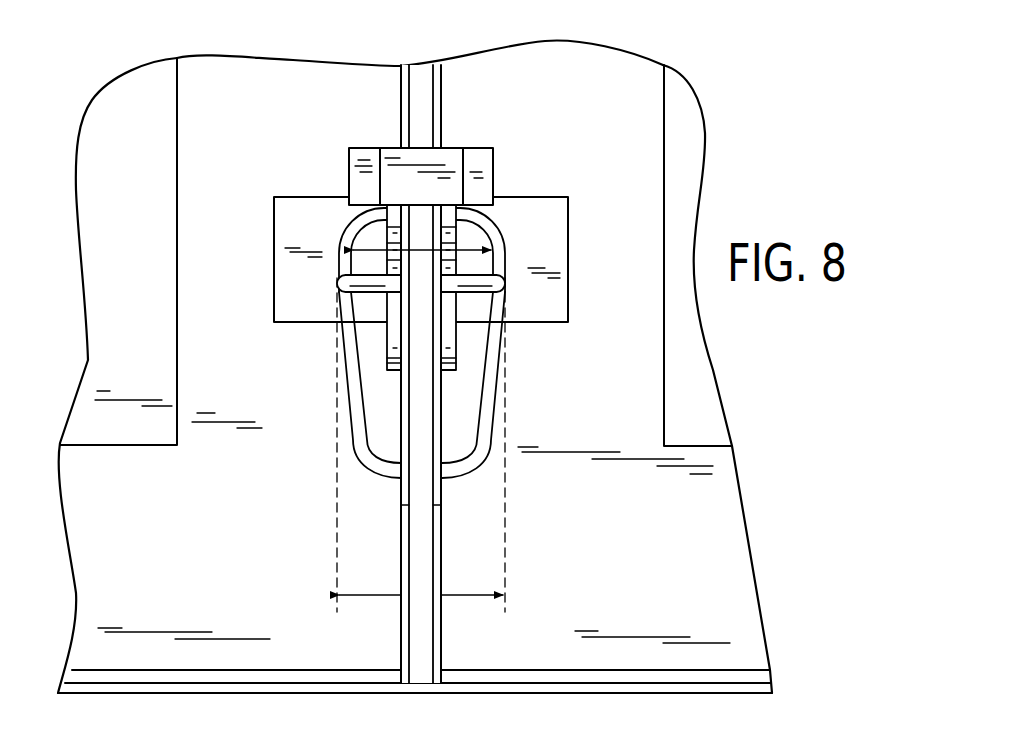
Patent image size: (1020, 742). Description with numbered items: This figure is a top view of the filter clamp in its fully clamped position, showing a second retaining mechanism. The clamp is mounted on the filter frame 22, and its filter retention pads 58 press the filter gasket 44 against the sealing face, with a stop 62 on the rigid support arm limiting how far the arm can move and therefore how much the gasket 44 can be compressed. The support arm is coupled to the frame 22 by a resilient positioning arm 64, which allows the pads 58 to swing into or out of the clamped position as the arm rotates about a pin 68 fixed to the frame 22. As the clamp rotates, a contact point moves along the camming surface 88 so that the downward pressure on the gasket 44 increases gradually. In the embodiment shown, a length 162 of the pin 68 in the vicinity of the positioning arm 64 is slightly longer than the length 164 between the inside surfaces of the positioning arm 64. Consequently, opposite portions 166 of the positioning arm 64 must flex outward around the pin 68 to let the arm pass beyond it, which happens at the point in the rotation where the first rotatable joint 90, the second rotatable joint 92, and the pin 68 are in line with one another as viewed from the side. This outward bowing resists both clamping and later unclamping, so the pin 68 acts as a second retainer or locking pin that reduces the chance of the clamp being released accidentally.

The filter frame 22 is at (478, 352).
The filter gasket 44 is at (653, 60).
The filter retention pad 58 is at (553, 207).
The stop 62 is at (473, 157).
The resilient positioning arm 64 is at (361, 418).
The pin 68 is at (467, 283).
The camming surface 88 is at (396, 347).
The first rotatable joint 90 is at (438, 472).
The second rotatable joint 92 is at (463, 207).
The length of the pin 162 is at (460, 598).
The length between inside surfaces of the positioning arm 164 is at (463, 249).
The opposite portions of the positioning arm 166 is at (497, 302).